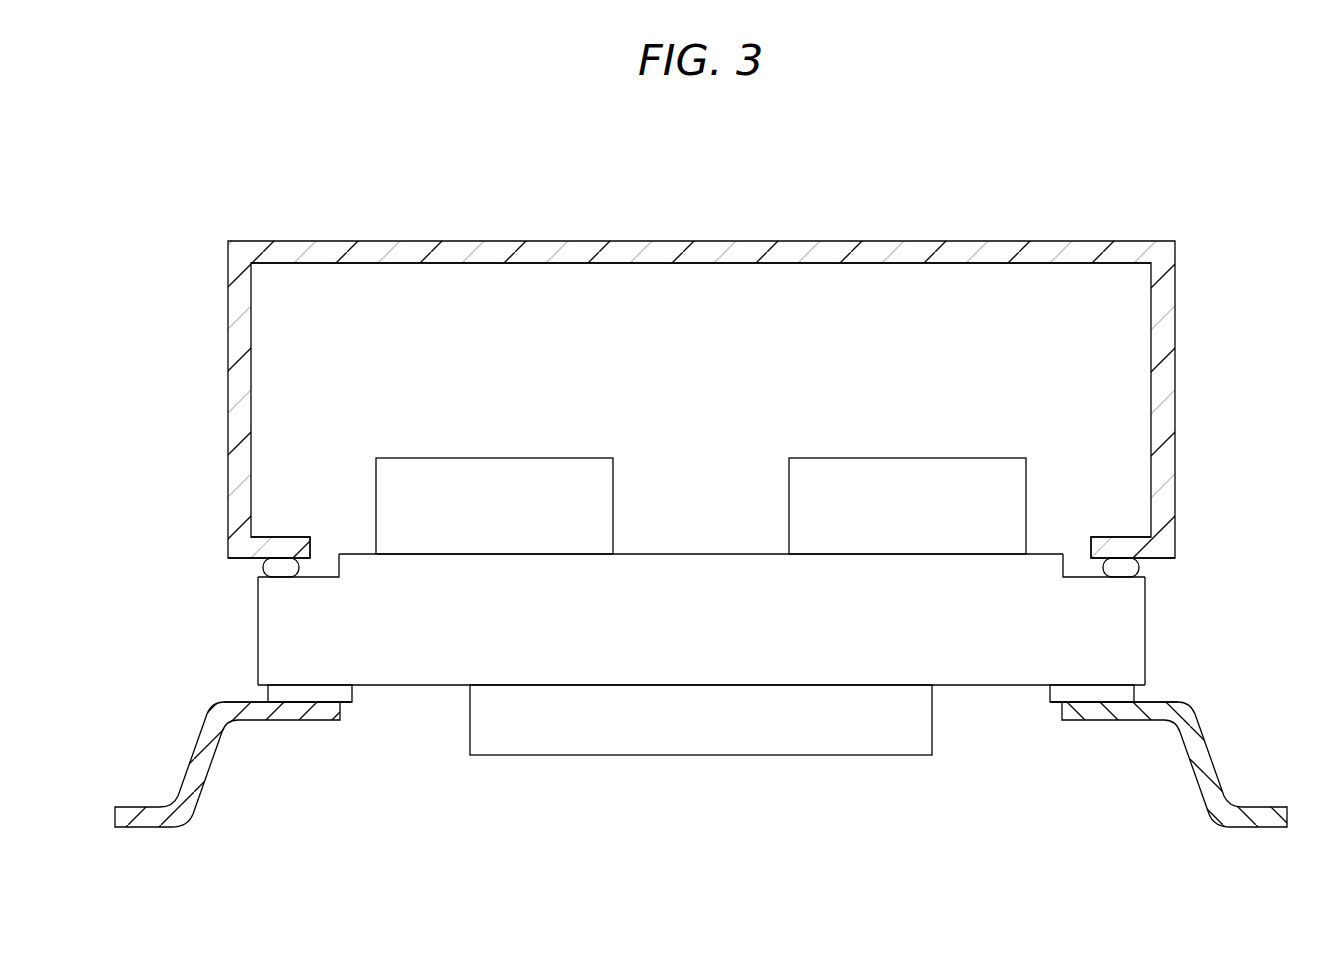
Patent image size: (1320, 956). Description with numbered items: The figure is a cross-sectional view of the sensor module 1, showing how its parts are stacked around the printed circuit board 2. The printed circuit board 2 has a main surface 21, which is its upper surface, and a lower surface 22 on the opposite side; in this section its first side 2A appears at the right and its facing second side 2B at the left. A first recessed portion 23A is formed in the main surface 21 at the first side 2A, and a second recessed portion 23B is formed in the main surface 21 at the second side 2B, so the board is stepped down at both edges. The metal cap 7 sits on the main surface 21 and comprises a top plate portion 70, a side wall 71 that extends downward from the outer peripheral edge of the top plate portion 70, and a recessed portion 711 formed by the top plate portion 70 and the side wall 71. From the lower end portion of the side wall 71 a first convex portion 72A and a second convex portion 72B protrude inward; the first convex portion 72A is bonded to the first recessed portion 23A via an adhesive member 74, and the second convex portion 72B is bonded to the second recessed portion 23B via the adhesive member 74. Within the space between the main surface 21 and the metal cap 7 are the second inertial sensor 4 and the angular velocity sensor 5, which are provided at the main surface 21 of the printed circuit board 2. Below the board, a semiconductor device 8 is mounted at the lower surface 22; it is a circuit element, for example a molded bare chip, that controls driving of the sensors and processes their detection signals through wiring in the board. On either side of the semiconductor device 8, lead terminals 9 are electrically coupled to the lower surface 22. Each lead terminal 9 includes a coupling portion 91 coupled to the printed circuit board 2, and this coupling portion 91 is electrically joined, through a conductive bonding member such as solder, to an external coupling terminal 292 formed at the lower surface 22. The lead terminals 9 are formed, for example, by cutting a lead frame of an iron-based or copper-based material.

The sensor module 1 is at (1195, 175).
The printed circuit board 2 is at (282, 617).
The first side 2A is at (1146, 652).
The second side 2B is at (256, 652).
The main surface 21 is at (714, 552).
The lower surface 22 is at (422, 686).
The first recessed portion 23A is at (1076, 575).
The second recessed portion 23B is at (326, 575).
The external coupling terminal 292 is at (348, 690).
The second inertial sensor 4 is at (493, 447).
The angular velocity sensor 5 is at (895, 447).
The metal cap 7 is at (302, 226).
The top plate portion 70 is at (341, 240).
The side wall 71 is at (232, 303).
The recessed portion 711 is at (404, 274).
The first convex portion 72A is at (1125, 536).
The second convex portion 72B is at (277, 536).
The adhesive member 74 is at (264, 567).
The semiconductor device 8 is at (702, 760).
The lead terminal 9 is at (174, 740).
The coupling portion 91 is at (318, 710).